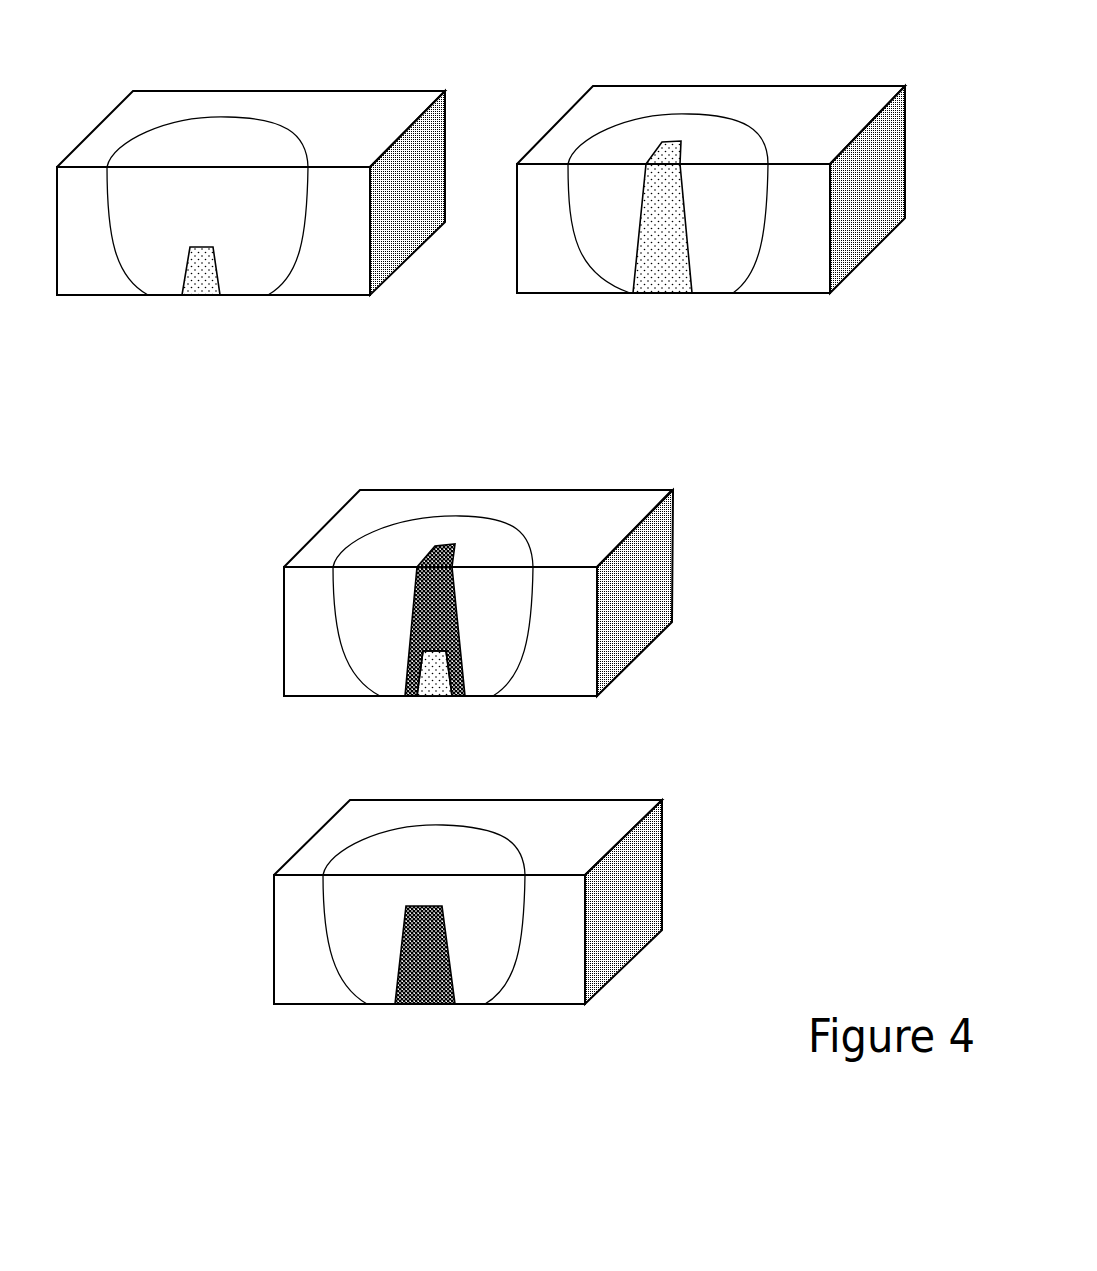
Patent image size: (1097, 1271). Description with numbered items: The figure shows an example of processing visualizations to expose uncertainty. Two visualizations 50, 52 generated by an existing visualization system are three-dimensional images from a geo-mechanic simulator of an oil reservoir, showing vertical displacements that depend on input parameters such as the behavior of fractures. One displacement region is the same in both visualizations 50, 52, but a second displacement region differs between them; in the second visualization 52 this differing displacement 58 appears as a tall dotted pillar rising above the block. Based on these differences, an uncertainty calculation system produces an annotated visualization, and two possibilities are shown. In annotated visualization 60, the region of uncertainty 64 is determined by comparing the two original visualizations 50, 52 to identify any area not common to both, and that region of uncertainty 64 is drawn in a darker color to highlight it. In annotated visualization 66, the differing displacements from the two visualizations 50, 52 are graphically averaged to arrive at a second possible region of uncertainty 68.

The visualization 50 is at (251, 192).
The visualization 52 is at (714, 190).
The region 58 is at (677, 248).
The annotated visualization 60 is at (424, 621).
The region of uncertainty 64 is at (478, 648).
The annotated visualization 66 is at (413, 941).
The second possible region of uncertainty 68 is at (430, 994).